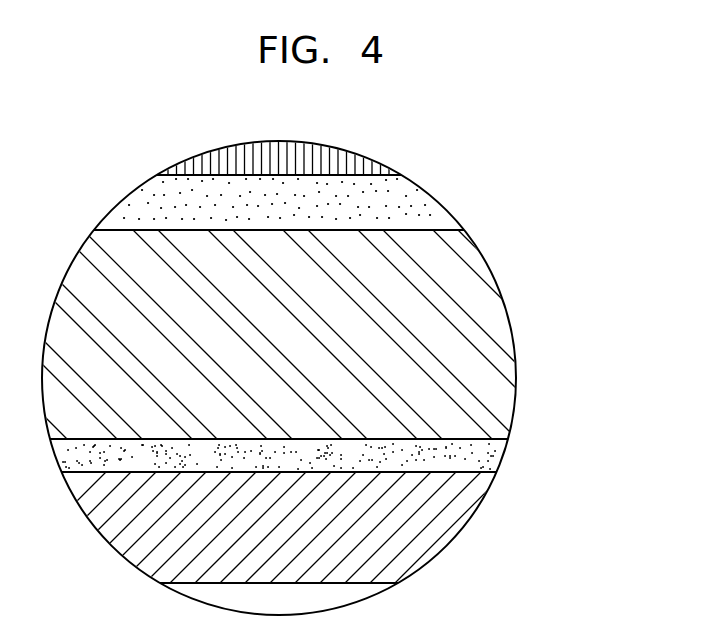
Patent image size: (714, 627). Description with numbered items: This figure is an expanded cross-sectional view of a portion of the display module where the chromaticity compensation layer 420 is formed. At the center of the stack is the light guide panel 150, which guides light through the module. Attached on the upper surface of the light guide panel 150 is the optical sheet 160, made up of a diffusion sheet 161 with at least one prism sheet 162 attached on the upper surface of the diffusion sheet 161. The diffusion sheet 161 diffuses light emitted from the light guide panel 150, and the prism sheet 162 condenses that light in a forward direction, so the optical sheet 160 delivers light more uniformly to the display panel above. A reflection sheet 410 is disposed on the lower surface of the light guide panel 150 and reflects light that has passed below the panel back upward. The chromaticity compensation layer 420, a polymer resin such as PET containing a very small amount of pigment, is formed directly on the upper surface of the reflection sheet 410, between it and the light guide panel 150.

The light guide panel 150 is at (505, 353).
The optical sheet 160 is at (483, 111).
The diffusion sheet 161 is at (412, 203).
The prism sheet 162 is at (352, 160).
The reflection sheet 410 is at (455, 517).
The chromaticity compensation layer 420 is at (493, 453).